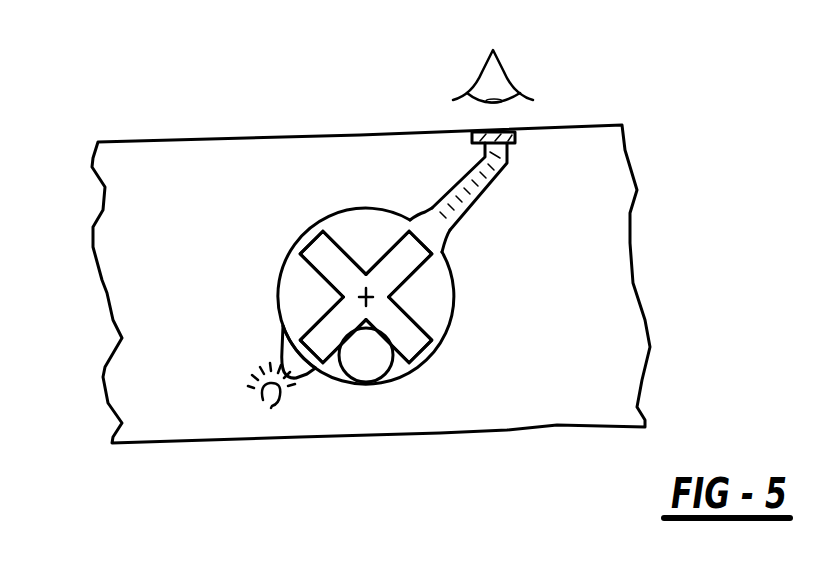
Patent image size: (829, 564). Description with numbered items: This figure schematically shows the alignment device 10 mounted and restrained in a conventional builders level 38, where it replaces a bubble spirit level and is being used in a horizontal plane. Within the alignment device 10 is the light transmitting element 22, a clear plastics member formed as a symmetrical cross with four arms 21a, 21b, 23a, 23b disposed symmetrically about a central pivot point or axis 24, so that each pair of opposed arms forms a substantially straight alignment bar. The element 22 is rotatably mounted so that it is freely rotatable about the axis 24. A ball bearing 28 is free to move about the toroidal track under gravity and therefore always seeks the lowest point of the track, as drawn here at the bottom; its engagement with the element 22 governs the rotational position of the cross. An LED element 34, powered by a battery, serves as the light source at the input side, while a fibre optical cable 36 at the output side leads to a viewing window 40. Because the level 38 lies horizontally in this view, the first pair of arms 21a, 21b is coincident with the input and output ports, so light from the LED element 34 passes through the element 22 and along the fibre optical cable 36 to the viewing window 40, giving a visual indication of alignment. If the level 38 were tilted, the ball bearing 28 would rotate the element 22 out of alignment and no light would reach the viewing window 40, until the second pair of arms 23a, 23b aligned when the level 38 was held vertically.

The alignment device 10 is at (456, 304).
The arm 21a is at (323, 340).
The arm 21b is at (402, 257).
The light transmitting element 22 is at (342, 250).
The arm 23a is at (413, 337).
The arm 23b is at (320, 250).
The central pivot point or axis 24 is at (360, 297).
The ball bearing 28 is at (373, 363).
The LED element 34 is at (264, 402).
The fibre optical cable 36 is at (467, 177).
The builders level 38 is at (197, 162).
The viewing window 40 is at (513, 130).